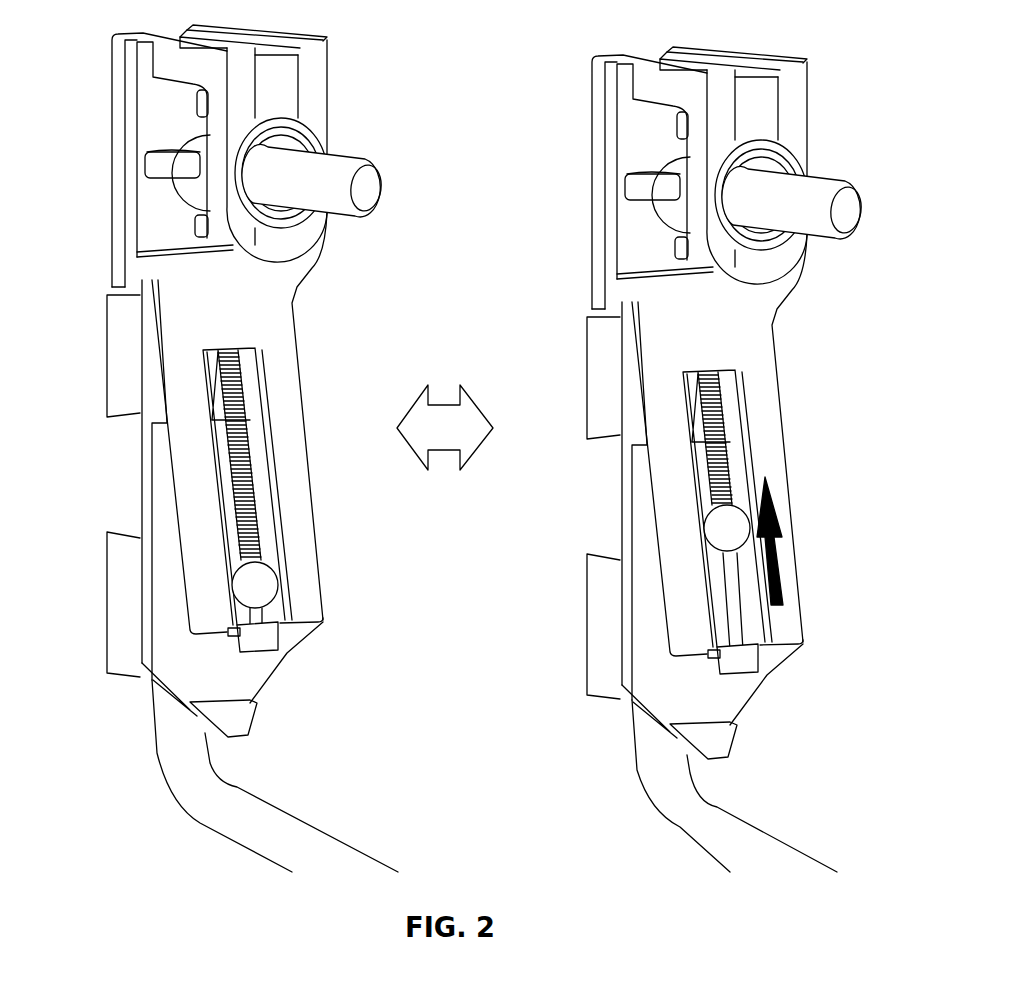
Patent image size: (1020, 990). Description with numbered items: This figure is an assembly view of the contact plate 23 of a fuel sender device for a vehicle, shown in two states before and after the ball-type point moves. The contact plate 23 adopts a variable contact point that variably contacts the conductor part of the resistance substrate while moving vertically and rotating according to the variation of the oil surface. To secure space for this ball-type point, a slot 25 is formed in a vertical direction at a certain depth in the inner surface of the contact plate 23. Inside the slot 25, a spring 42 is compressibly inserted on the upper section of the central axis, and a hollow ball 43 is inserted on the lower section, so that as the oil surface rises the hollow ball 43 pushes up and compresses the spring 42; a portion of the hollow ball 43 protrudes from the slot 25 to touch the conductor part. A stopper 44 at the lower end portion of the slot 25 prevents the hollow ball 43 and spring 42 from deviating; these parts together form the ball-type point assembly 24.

The contact plate 23 is at (169, 475).
The adjustment unit 24 is at (343, 502).
The slot 25 is at (252, 396).
The spring 42 is at (257, 500).
The hollow ball 43 is at (272, 585).
The stopper 44 is at (323, 638).